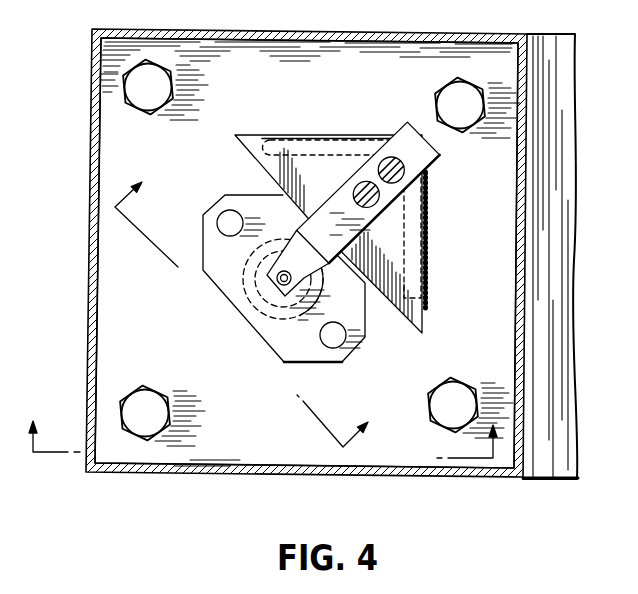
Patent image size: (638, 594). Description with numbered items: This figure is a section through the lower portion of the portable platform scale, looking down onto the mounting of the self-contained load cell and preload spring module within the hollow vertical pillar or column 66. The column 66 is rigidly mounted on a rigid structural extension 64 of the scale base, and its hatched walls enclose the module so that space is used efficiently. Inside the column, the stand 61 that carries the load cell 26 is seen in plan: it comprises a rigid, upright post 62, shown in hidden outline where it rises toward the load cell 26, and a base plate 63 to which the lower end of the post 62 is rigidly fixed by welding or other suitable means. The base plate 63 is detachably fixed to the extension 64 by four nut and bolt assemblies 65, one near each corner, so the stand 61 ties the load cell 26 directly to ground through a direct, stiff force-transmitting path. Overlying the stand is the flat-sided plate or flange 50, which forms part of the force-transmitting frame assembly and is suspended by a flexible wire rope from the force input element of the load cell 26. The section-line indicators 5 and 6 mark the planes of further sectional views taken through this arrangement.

The load cell 26 is at (372, 221).
The flat-sided plate or flange 50 is at (305, 362).
The stand 61 is at (247, 120).
The upright post 62 is at (262, 135).
The base plate 63 is at (149, 336).
The rigid structural extension 64 is at (563, 233).
The nut and bolt assemblies 65 is at (157, 103).
The hollow vertical pillar or column 66 is at (91, 132).
The section line 5- 5 is at (264, 428).
The section line 6- 6 is at (247, 304).